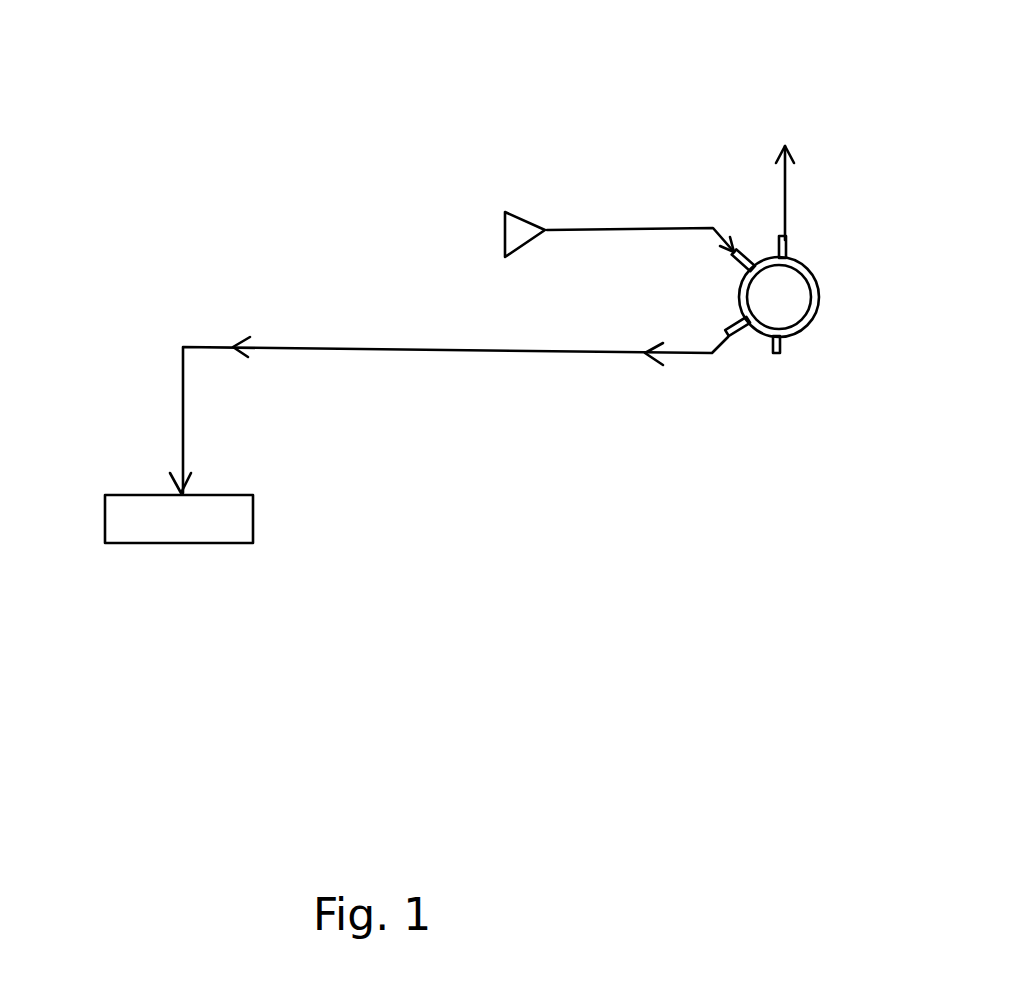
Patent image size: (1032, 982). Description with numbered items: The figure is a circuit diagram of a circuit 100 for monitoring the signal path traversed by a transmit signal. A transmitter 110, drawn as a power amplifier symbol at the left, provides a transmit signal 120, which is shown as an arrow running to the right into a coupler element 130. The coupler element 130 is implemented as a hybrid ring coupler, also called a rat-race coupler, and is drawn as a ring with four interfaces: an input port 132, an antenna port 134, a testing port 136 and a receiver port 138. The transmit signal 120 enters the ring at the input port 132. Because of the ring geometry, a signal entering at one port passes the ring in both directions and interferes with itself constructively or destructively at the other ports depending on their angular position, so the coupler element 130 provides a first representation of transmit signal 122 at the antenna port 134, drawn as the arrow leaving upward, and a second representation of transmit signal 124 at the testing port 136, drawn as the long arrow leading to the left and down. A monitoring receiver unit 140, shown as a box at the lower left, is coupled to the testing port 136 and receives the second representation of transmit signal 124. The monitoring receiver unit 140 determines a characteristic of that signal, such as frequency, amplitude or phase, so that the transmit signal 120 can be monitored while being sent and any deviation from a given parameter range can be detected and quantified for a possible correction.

The circuit 100 is at (985, 112).
The transmitter 110 is at (518, 210).
The transmit signal 120 is at (632, 228).
The first representation of transmit signal 122 is at (787, 180).
The second representation of transmit signal 124 is at (680, 363).
The coupler element 130 is at (823, 297).
The input port 132 is at (733, 270).
The antenna port 134 is at (793, 247).
The testing port 136 is at (743, 340).
The receiver port 138 is at (787, 345).
The monitoring receiver unit 140 is at (253, 519).